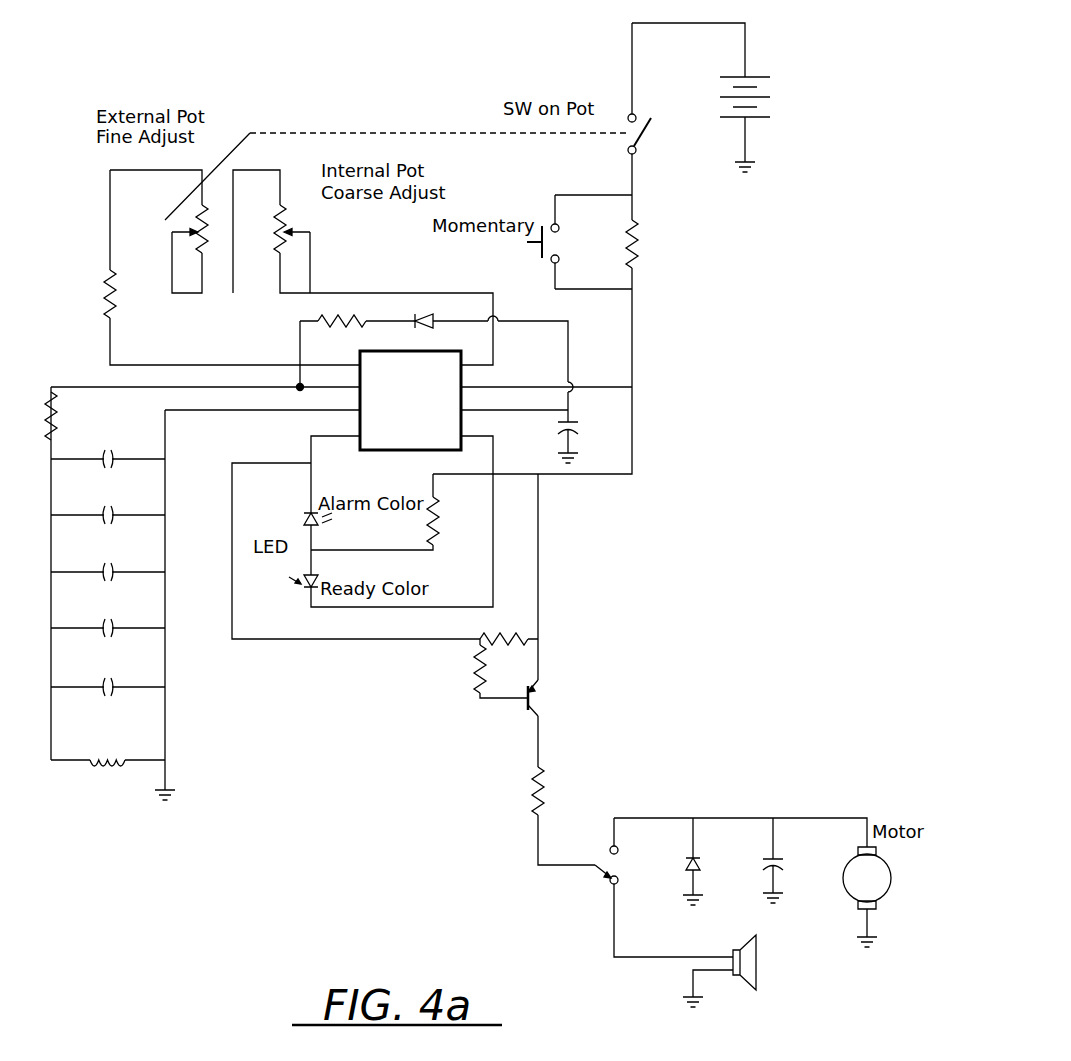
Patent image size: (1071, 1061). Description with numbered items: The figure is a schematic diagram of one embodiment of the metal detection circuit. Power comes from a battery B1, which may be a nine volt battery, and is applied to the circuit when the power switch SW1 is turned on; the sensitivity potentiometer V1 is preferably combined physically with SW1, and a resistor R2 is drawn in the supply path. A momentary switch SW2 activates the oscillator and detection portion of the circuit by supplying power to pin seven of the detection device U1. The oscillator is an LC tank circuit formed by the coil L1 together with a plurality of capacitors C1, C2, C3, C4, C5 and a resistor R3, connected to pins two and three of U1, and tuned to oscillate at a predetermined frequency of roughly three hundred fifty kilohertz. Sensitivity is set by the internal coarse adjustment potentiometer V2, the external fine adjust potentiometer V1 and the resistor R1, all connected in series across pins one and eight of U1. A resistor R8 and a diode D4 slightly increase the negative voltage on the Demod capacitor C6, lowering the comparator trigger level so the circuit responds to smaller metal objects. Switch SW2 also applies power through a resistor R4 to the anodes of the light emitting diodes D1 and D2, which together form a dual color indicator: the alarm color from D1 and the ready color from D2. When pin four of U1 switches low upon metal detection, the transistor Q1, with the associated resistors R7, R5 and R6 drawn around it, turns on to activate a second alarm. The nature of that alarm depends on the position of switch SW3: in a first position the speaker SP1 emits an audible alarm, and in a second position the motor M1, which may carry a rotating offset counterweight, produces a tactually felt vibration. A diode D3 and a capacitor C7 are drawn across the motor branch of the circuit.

The battery B1 is at (750, 110).
The power switch SW1 is at (662, 134).
The oscillator activation switch SW2 is at (565, 243).
The resistor R2 is at (648, 244).
The external fine adjust potentiometer V1 is at (167, 221).
The internal coarse adjustment potentiometer V2 is at (293, 226).
The resistor R1 is at (124, 294).
The resistor R8 is at (342, 309).
The diode D4 is at (419, 310).
The detection integrated circuit U1 is at (410, 388).
The Demod capacitor C6 is at (583, 441).
The resistor R3 is at (65, 416).
The capacitor C1 is at (112, 445).
The capacitor C2 is at (109, 503).
The capacitor C3 is at (110, 559).
The capacitor C4 is at (109, 615).
The capacitor C5 is at (109, 674).
The coil L1 is at (107, 748).
The light emitting diode D1 is at (324, 497).
The light emitting diode D2 is at (318, 570).
The resistor R4 is at (452, 518).
The resistor R7 is at (504, 627).
The resistor R5 is at (493, 669).
The transistor Q1 is at (551, 698).
The resistor R6 is at (553, 791).
The alarm selector switch SW3 is at (586, 860).
The diode D3 is at (676, 874).
The capacitor C7 is at (789, 870).
The motor M1 is at (867, 897).
The speaker SP1 is at (719, 964).